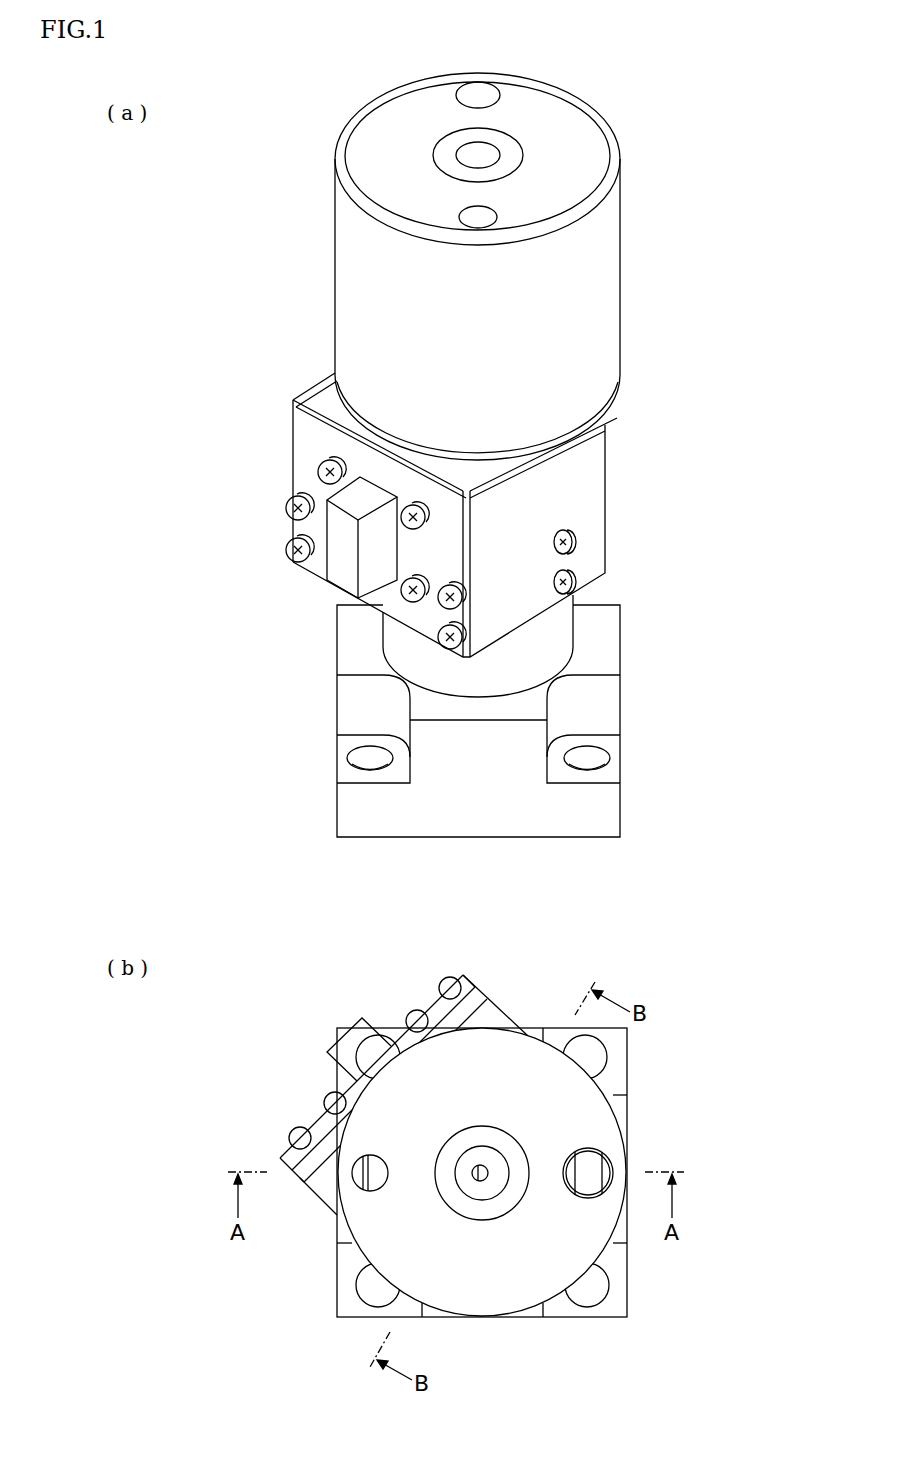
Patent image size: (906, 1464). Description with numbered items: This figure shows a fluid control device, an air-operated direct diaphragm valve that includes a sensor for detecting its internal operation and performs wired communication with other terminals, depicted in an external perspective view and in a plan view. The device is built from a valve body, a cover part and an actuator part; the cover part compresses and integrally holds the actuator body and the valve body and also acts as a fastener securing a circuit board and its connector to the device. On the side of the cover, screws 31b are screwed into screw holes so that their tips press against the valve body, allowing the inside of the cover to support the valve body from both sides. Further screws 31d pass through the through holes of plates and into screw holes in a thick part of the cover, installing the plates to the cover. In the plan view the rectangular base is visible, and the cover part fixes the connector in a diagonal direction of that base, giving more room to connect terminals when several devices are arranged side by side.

The screw 31b is at (570, 540).
The screws 31d is at (285, 507).